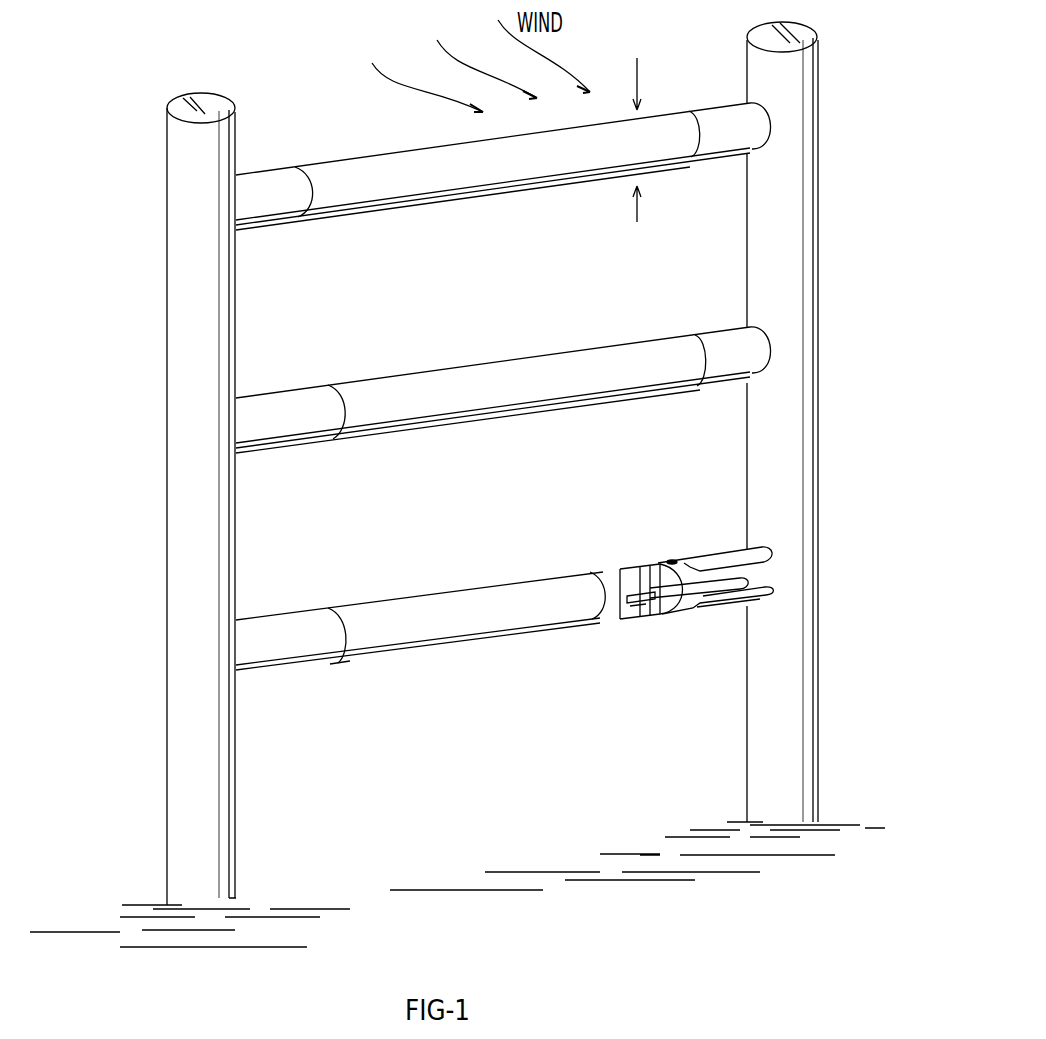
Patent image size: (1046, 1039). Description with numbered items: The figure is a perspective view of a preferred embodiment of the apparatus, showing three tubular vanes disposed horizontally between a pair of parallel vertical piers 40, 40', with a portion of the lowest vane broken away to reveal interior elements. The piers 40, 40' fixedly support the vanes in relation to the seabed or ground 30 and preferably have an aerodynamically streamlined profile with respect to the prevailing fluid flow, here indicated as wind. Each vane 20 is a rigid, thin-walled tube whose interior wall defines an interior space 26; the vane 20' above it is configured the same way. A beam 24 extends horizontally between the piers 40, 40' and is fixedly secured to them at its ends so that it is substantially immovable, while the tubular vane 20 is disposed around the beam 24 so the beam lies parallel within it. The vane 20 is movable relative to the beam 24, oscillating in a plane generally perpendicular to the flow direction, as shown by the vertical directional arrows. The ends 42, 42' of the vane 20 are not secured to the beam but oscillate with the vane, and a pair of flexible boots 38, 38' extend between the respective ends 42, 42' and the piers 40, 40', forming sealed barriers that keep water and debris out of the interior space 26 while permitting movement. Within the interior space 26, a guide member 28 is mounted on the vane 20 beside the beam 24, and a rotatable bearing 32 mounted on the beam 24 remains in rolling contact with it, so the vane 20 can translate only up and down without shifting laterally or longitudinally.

The vane 20 is at (420, 603).
The vane 20' is at (503, 381).
The beam 24 is at (613, 598).
The interior space 26 is at (662, 613).
The guide member 28 is at (637, 612).
The seabed or ground 30 is at (568, 872).
The rotatable bearing 32 is at (640, 597).
The flexible boot 38 is at (287, 360).
The flexible boot 38' is at (773, 330).
The pier 40 is at (161, 499).
The pier 40' is at (830, 422).
The vane end 42 is at (368, 696).
The vane end 42' is at (699, 531).